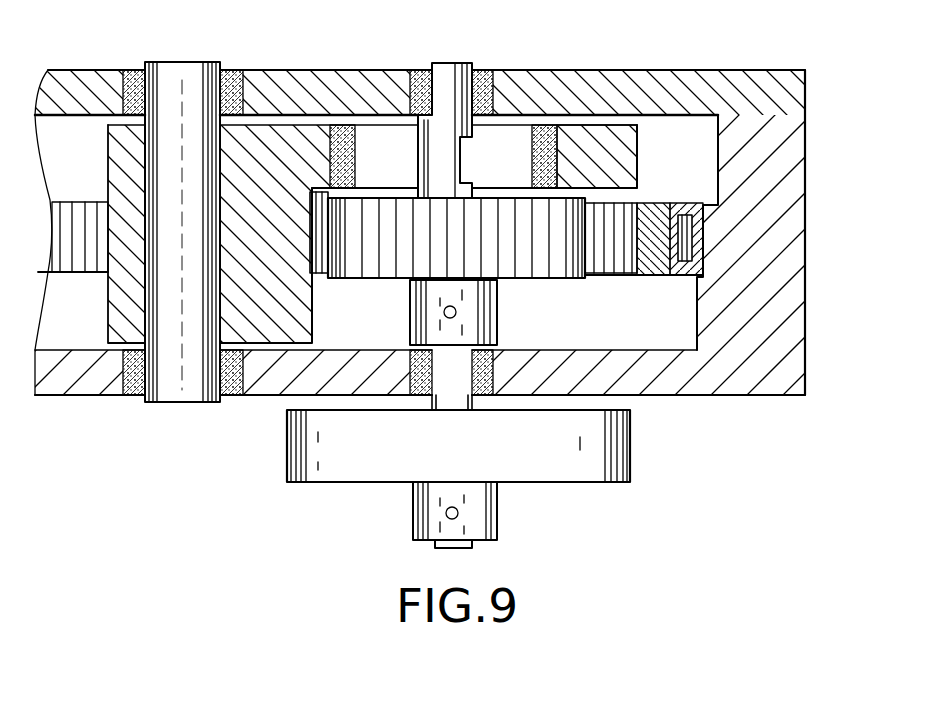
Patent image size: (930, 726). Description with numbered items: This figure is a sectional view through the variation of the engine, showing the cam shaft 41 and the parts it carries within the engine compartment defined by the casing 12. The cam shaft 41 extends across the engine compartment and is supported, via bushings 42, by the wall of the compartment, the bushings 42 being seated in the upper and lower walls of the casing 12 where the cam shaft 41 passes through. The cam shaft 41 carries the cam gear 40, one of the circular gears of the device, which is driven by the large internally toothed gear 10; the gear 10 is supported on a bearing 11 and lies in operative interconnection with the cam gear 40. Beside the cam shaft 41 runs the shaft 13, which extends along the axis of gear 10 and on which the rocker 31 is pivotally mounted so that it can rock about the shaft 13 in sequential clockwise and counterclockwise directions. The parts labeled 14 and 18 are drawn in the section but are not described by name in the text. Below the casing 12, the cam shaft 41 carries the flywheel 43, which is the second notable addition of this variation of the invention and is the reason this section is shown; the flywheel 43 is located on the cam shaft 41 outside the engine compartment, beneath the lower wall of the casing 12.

The internally toothed gear 10 is at (608, 260).
The bearing 11 is at (700, 244).
The casing 12 is at (763, 392).
The shaft 13 is at (197, 76).
The bushing 14 is at (127, 77).
The recess 18 is at (580, 124).
The rocker 31 is at (605, 137).
The cam gear 40 is at (345, 270).
The cam shaft 41 is at (450, 78).
The bushings 42 is at (485, 76).
The flywheel 43 is at (603, 472).